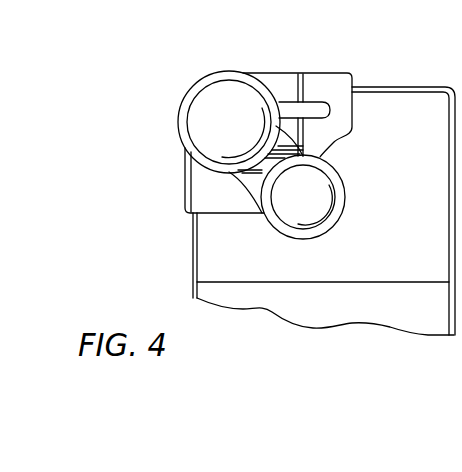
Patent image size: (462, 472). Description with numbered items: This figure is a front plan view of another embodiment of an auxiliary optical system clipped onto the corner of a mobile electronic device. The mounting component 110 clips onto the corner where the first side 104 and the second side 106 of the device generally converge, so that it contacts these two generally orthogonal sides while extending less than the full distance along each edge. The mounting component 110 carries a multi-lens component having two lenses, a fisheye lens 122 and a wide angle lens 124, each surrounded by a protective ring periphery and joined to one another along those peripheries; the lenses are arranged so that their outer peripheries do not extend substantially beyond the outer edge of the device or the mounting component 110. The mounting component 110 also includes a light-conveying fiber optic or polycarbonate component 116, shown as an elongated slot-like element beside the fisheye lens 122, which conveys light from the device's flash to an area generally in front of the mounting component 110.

The first side 104 is at (192, 244).
The second side 106 is at (401, 86).
The mounting component 110 is at (173, 172).
The fiber optic or polycarbonate component 116 is at (293, 112).
The fisheye lens 122 is at (207, 107).
The wide angle lens 124 is at (297, 206).